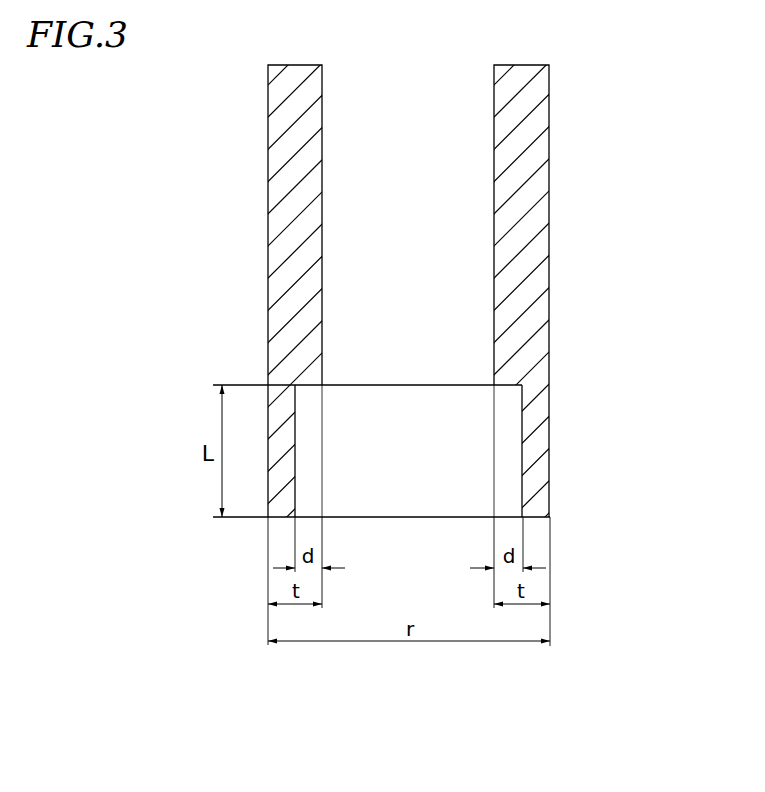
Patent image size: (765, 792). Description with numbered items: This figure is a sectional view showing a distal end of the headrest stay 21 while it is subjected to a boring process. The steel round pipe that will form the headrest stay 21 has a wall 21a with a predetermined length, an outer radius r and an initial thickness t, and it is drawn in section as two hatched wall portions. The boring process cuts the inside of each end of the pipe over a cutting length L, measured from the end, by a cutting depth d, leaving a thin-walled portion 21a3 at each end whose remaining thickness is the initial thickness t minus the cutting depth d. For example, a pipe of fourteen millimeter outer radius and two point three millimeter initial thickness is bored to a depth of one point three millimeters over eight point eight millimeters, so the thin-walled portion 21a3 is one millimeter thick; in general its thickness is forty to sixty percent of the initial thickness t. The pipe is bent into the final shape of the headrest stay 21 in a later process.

The headrest stay 21 is at (419, 334).
The headrest stay pipe wall 21a is at (542, 213).
The thin-walled portion 21a3 is at (543, 450).